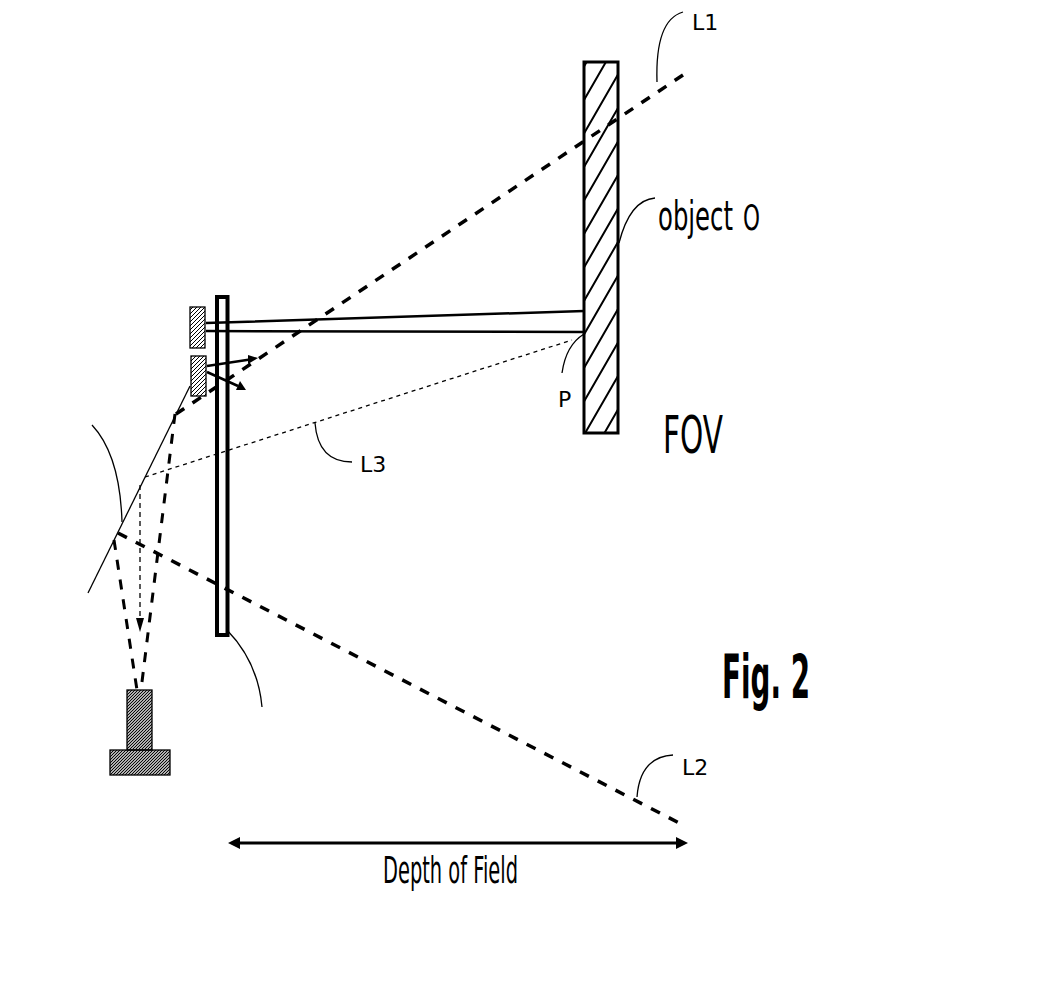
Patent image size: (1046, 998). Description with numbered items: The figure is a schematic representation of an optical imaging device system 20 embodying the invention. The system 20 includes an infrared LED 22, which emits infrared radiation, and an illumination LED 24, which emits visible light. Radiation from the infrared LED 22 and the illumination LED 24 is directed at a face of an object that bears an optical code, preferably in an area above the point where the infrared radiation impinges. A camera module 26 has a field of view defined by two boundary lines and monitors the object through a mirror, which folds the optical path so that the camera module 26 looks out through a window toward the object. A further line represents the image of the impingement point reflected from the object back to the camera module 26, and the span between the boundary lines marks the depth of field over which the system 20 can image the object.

The optical imaging device system 20 is at (110, 140).
The infrared LED 22 is at (193, 306).
The illumination LED 24 is at (188, 356).
The camera module 26 is at (112, 765).